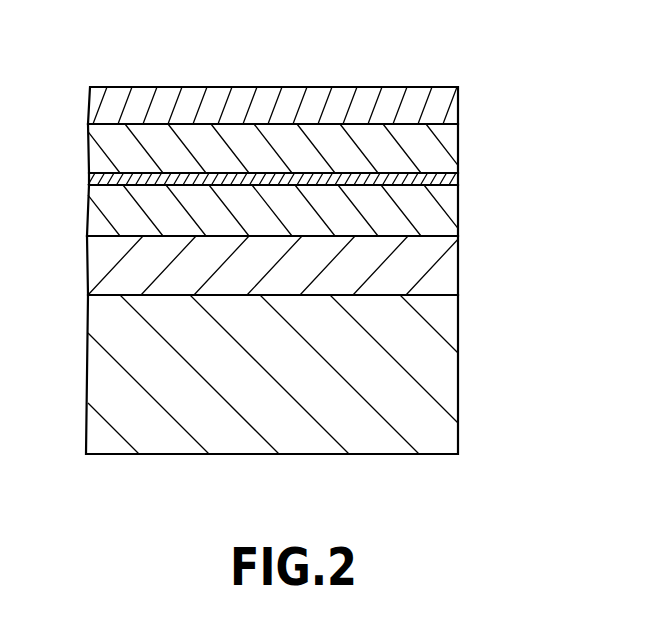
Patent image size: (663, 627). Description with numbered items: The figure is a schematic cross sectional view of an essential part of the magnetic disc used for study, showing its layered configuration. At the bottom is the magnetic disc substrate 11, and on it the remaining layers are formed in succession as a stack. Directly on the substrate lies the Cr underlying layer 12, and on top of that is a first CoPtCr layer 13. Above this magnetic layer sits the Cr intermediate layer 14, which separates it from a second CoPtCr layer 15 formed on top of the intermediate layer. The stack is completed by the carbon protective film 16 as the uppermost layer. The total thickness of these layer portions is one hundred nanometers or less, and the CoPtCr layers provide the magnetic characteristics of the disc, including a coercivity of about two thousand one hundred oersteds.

The substrate 11 is at (445, 383).
The underlayer 12 is at (447, 271).
The first magnetic layer 13 is at (450, 221).
The intermediate layer 14 is at (450, 184).
The second magnetic layer 15 is at (450, 154).
The protective layer 16 is at (450, 109).